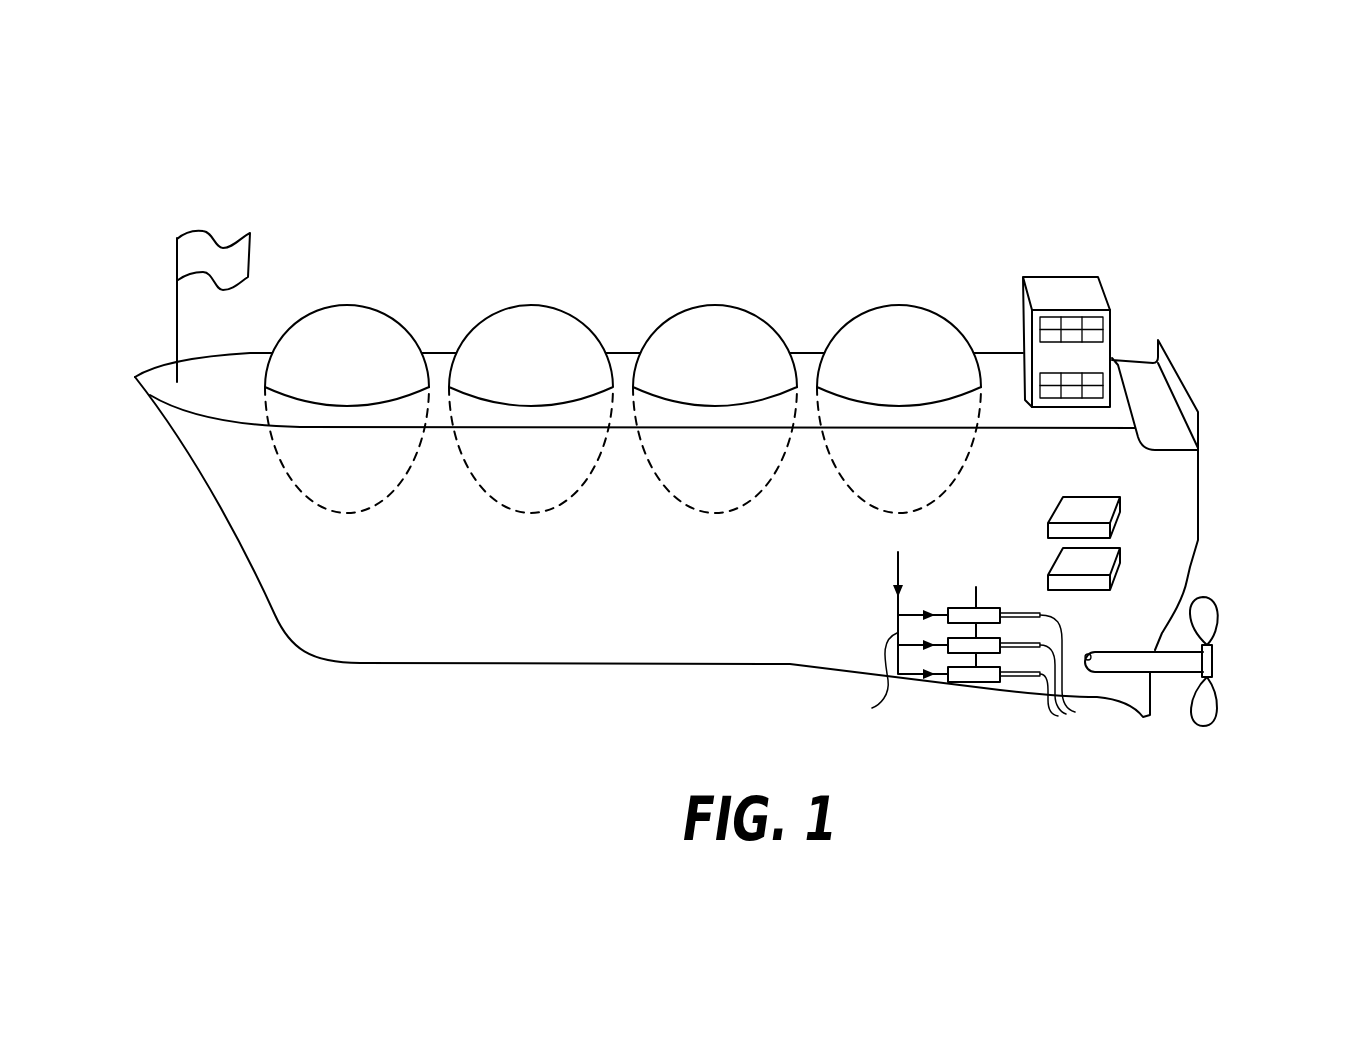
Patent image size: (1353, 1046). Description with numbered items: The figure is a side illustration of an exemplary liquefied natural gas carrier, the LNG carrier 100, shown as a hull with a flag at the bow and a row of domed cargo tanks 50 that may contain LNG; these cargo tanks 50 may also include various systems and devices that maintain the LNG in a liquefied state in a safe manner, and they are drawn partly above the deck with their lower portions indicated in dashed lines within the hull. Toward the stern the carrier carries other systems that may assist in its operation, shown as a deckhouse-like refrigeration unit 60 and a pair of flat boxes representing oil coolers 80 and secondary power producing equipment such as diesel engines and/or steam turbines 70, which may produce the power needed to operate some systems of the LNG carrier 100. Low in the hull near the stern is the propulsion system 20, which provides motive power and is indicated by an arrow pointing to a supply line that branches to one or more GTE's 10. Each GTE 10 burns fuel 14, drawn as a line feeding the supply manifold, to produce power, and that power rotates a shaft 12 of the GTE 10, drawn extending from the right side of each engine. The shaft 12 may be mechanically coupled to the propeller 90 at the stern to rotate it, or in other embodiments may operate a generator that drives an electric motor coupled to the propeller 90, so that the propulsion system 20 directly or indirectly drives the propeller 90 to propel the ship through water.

The LNG carrier 100 is at (216, 145).
The cargo tanks 50 is at (913, 367).
The refrigeration units 60 is at (1112, 330).
The steam turbines 70 is at (1059, 504).
The oil coolers 80 is at (1058, 557).
The propulsion system 20 is at (866, 619).
The GTE 10 is at (988, 617).
The shaft 12 is at (1070, 677).
The fuel 14 is at (867, 677).
The propeller 90 is at (1207, 613).